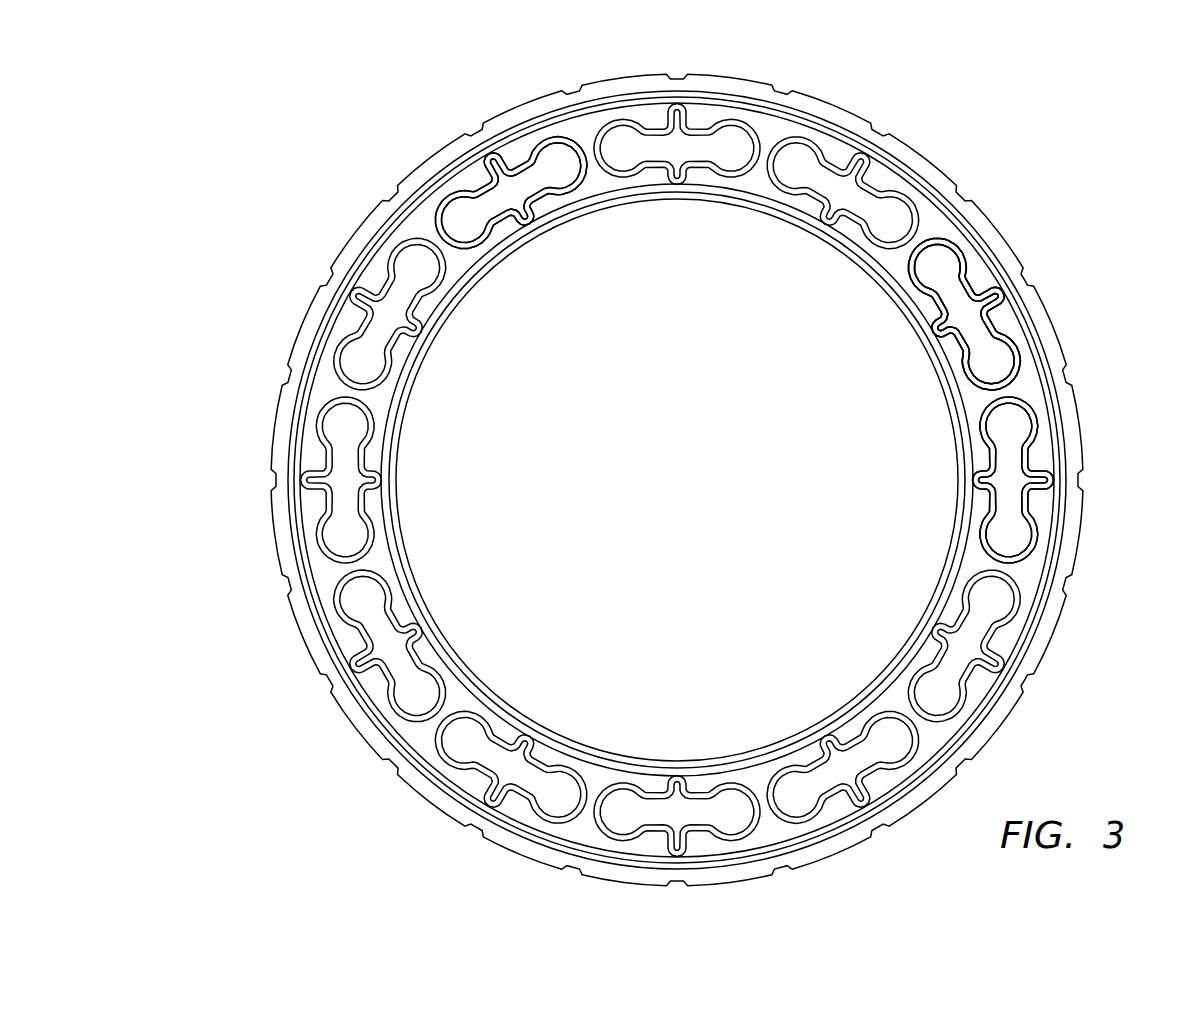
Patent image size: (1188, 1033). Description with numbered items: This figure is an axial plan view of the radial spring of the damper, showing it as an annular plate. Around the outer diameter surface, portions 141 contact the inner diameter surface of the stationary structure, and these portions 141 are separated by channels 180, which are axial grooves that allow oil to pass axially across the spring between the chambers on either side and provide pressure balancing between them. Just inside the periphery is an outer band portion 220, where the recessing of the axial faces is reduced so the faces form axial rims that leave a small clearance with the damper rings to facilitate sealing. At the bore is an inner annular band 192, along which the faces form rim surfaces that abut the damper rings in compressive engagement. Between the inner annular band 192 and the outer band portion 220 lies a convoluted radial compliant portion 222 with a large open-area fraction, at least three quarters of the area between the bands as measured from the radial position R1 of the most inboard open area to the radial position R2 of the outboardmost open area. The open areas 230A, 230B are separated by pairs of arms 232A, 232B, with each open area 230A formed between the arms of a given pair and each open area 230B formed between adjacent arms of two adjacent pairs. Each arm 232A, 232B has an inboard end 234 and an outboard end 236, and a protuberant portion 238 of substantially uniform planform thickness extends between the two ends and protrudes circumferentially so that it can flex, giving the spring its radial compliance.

The channels 180 is at (672, 458).
The portions 141 is at (937, 167).
The inner annular band 192 is at (415, 402).
The outer band portion 220 is at (297, 357).
The convoluted radial compliant portion 222 is at (383, 562).
The open area 230A is at (682, 143).
The open area 230B is at (594, 176).
The arm 232A is at (955, 238).
The arm 232B is at (1020, 373).
The inboard end 234 is at (947, 342).
The outboard end 236 is at (1007, 303).
The protuberant portion 238 is at (1002, 385).
The radial position of the most inboard open area R1 is at (750, 198).
The radial position of the outboardmost open area R2 is at (741, 182).